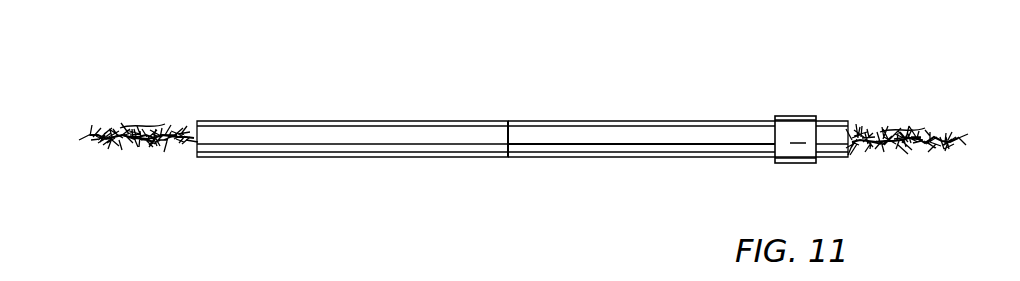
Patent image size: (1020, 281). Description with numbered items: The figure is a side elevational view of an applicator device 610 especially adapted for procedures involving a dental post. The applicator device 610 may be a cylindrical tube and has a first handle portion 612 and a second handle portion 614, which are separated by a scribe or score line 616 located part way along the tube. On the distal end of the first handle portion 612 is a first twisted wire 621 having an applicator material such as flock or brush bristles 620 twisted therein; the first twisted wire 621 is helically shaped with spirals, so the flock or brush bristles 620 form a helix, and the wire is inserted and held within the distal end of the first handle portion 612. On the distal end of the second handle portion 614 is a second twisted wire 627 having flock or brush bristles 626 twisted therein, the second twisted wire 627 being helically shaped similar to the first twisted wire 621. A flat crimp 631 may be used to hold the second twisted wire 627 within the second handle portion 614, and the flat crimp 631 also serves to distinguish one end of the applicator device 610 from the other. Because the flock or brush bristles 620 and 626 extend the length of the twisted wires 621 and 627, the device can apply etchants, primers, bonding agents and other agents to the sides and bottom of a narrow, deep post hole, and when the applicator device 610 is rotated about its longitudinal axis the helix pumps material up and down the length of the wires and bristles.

The applicator device 610 is at (545, 88).
The first handle portion 612 is at (353, 158).
The second handle portion 614 is at (655, 147).
The scribe or score line 616 is at (507, 137).
The flock or brush bristles 620 is at (130, 150).
The first twisted wire 621 is at (138, 128).
The flock or brush bristles 626 is at (930, 147).
The second twisted wire 627 is at (897, 130).
The flat crimp 631 is at (792, 163).